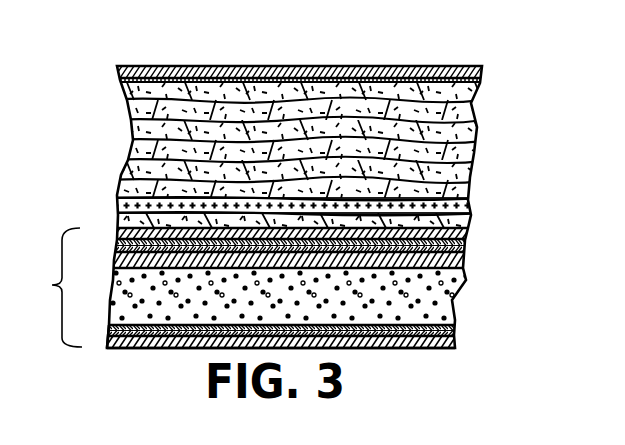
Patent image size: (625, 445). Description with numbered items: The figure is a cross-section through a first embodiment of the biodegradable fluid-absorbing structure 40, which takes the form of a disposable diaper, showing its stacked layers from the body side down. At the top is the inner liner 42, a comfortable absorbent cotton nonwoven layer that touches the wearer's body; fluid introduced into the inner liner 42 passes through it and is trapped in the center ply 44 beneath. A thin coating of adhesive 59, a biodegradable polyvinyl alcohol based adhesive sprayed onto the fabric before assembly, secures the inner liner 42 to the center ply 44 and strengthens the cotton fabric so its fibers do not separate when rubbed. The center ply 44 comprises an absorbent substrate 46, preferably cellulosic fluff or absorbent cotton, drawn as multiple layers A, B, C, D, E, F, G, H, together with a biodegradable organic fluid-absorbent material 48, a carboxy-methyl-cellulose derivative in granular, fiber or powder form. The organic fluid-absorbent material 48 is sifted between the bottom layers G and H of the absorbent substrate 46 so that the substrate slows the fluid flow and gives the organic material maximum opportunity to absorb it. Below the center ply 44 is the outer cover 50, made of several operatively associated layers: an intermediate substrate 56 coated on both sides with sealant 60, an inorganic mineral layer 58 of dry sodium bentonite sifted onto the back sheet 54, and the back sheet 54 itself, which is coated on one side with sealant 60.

The fluid-absorbing structure 40 is at (534, 204).
The inner liner 42 is at (479, 73).
The center ply 44 is at (485, 123).
The absorbent substrate 46 is at (476, 142).
The organic fluid-absorbent material 48 is at (118, 200).
The outer cover 50 is at (236, 288).
The back sheet 54 is at (452, 347).
The intermediate substrate 56 is at (466, 262).
The inorganic mineral layer 58 is at (452, 298).
The adhesive 59 is at (481, 80).
The sealant 60 is at (467, 238).
The layer A is at (118, 83).
The layer B is at (128, 103).
The layer C is at (131, 122).
The layer D is at (131, 140).
The layer E is at (130, 150).
The layer F is at (122, 164).
The layer G is at (119, 183).
The layer H is at (118, 212).